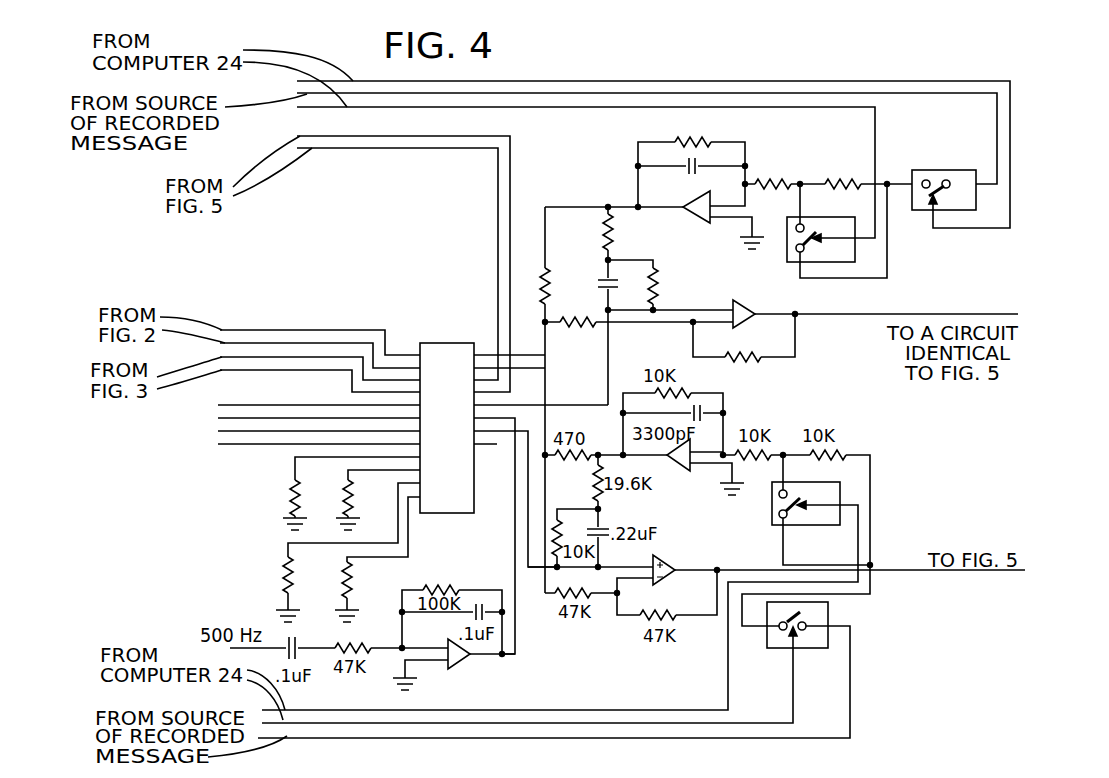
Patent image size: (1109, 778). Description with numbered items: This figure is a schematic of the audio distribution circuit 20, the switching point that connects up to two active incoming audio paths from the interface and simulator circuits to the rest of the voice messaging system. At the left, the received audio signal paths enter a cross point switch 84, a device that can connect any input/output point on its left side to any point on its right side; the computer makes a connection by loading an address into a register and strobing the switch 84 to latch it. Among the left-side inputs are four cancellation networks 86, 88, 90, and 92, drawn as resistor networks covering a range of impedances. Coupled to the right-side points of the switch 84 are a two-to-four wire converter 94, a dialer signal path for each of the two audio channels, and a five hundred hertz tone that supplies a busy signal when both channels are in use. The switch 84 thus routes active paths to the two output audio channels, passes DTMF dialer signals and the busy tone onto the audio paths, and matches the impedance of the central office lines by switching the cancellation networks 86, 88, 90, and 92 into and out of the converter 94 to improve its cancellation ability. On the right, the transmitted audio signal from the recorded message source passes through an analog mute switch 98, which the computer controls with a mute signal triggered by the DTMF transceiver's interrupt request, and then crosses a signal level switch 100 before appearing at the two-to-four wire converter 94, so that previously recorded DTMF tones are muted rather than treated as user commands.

The audio distribution circuit 20 is at (1027, 147).
The cross point switch 84 is at (448, 343).
The cancellation network 86 is at (288, 500).
The cancellation network 88 is at (348, 500).
The cancellation network 90 is at (288, 582).
The cancellation network 92 is at (350, 580).
The 2-to-4 wire converter 94 is at (611, 180).
The analog mute switch 98 is at (952, 168).
The signal level switch 100 is at (786, 240).